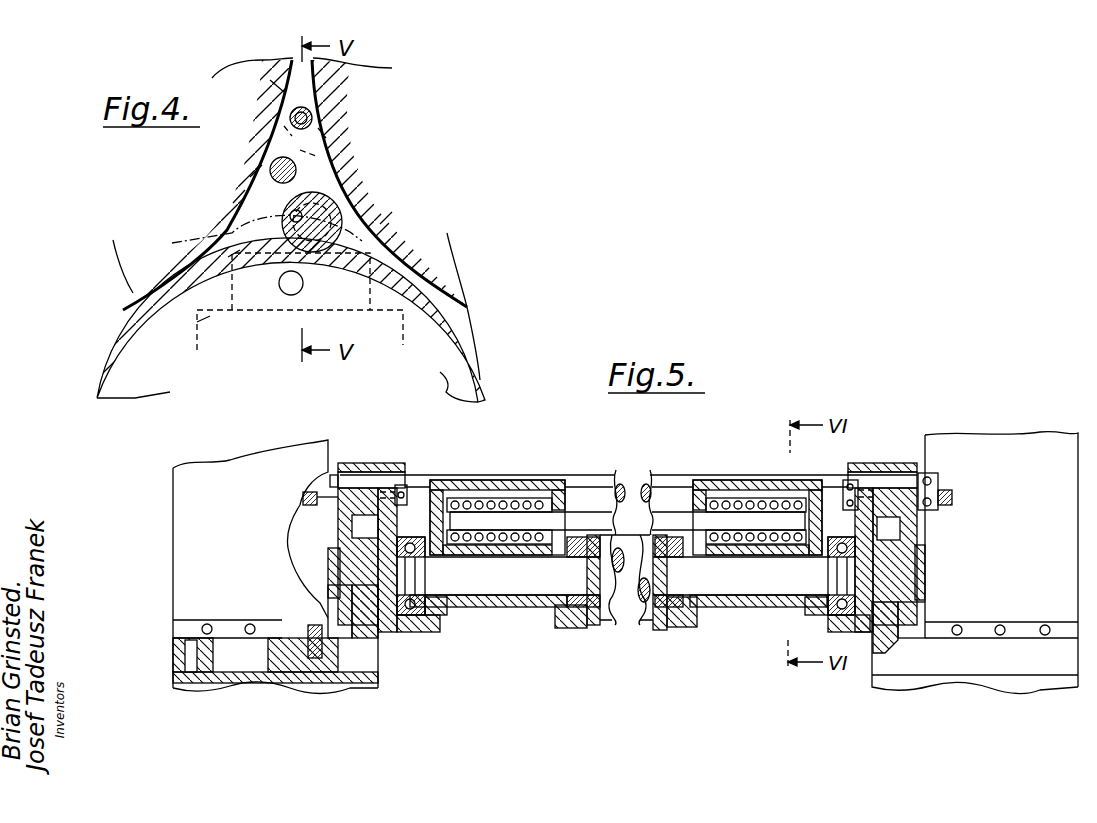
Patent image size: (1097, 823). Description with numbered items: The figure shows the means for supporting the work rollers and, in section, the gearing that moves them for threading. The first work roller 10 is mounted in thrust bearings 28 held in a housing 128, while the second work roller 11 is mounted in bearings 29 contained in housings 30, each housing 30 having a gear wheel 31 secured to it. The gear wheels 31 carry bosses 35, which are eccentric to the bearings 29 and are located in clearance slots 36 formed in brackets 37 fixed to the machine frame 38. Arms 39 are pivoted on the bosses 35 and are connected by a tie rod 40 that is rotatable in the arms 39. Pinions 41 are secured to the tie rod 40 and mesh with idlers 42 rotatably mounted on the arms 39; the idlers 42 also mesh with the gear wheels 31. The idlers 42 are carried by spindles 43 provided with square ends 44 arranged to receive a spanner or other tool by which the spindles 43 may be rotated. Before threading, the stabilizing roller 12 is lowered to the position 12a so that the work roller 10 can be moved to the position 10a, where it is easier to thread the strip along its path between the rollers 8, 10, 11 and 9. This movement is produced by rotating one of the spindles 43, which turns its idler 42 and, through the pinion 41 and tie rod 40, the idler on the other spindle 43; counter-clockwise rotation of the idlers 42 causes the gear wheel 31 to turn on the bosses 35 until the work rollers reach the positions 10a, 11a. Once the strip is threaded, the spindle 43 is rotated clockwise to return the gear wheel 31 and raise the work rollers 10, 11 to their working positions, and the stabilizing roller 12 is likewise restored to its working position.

In FIG. 4, the roller 8 is at (117, 290).
In FIG. 4, the roller 9 is at (456, 280).
In FIG. 4, the first work roller 10 is at (250, 177).
In FIG. 5, the first work roller 10 is at (618, 517).
In FIG. 4, the position of work roller 10a is at (297, 293).
In FIG. 4, the second work roller 11 is at (380, 224).
In FIG. 5, the second work roller 11 is at (640, 610).
In FIG. 4, the position of work roller 11a is at (251, 234).
In FIG. 4, the stabilizing roller 12 is at (291, 303).
In FIG. 4, the position of stabilizing roller 12a is at (256, 300).
In FIG. 5, the thrust bearings 28 is at (556, 484).
In FIG. 5, the housing 128 is at (515, 484).
In FIG. 5, the bearings 29 is at (418, 612).
In FIG. 5, the housing 30 is at (430, 618).
In FIG. 4, the gear wheel 31 is at (233, 203).
In FIG. 5, the gear wheel 31 is at (382, 632).
In FIG. 5, the bosses 35 is at (340, 578).
In FIG. 4, the clearance slots 36 is at (362, 195).
In FIG. 5, the clearance slots 36 is at (330, 556).
In FIG. 4, the brackets 37 is at (228, 257).
In FIG. 5, the brackets 37 is at (358, 606).
In FIG. 4, the machine frame 38 is at (197, 322).
In FIG. 5, the machine frame 38 is at (372, 683).
In FIG. 4, the arms 39 is at (281, 157).
In FIG. 5, the arms 39 is at (350, 530).
In FIG. 4, the tie rod 40 is at (324, 113).
In FIG. 5, the tie rod 40 is at (630, 474).
In FIG. 4, the pinions 41 is at (285, 101).
In FIG. 5, the pinions 41 is at (398, 463).
In FIG. 4, the idlers 42 is at (283, 130).
In FIG. 5, the idlers 42 is at (402, 497).
In FIG. 4, the spindles 43 is at (325, 133).
In FIG. 5, the spindles 43 is at (332, 490).
In FIG. 4, the square ends 44 is at (315, 153).
In FIG. 5, the square ends 44 is at (303, 497).